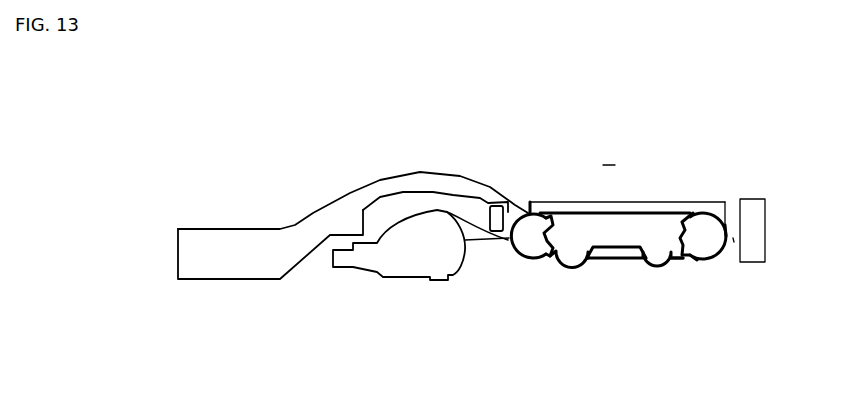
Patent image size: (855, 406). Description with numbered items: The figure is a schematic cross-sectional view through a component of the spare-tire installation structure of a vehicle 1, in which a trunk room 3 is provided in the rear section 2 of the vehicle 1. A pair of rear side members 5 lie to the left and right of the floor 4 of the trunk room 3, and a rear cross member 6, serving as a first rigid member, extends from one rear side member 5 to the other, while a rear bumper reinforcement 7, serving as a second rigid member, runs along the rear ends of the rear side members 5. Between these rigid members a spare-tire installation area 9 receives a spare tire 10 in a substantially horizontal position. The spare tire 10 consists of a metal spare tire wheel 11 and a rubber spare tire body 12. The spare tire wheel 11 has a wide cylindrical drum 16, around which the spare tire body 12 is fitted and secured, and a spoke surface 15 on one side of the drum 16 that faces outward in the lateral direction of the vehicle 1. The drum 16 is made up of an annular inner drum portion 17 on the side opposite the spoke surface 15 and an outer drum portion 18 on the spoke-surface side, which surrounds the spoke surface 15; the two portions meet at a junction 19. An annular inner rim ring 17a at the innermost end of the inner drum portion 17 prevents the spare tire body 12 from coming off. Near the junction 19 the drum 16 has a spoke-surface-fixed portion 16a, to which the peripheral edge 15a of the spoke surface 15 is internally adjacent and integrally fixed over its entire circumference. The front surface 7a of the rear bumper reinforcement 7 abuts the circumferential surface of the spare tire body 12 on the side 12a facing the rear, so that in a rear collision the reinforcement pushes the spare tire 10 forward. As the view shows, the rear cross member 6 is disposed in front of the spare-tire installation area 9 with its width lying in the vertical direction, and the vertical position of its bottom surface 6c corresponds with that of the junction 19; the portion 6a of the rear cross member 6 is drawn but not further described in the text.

The vehicle 1 is at (205, 227).
The rear section 2 is at (641, 235).
The trunk room 3 is at (641, 235).
The floor 4 is at (696, 201).
The rear side member 5 is at (717, 200).
The rear cross member 6 is at (430, 173).
The arm connecting portion 6a is at (506, 245).
The bottom surface 6c is at (503, 240).
The rear bumper reinforcement 7 is at (766, 208).
The front surface 7a is at (733, 240).
The spare-tire installation area 9 is at (488, 204).
The spare tire 10 is at (693, 353).
The spare tire wheel 11 is at (660, 267).
The spare tire body 12 is at (692, 263).
The side 12a is at (731, 227).
The spoke surface 15 is at (573, 263).
The peripheral edge 15a is at (672, 242).
The drum 16 is at (577, 113).
The spoke-surface-fixed portion 16a is at (678, 238).
The inner drum portion 17 is at (548, 203).
The inner rim ring 17a is at (527, 207).
The outer drum portion 18 is at (563, 203).
The junction 19 is at (523, 255).